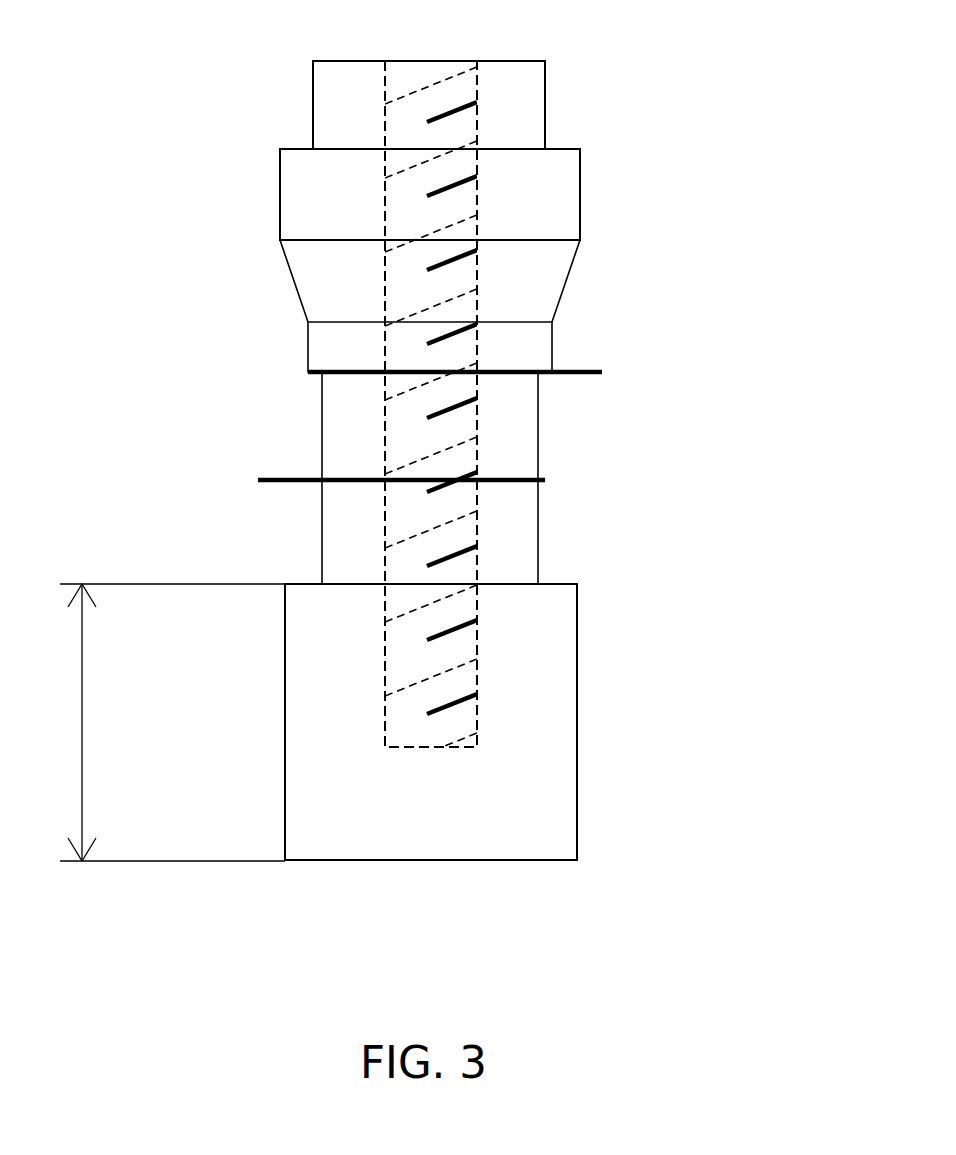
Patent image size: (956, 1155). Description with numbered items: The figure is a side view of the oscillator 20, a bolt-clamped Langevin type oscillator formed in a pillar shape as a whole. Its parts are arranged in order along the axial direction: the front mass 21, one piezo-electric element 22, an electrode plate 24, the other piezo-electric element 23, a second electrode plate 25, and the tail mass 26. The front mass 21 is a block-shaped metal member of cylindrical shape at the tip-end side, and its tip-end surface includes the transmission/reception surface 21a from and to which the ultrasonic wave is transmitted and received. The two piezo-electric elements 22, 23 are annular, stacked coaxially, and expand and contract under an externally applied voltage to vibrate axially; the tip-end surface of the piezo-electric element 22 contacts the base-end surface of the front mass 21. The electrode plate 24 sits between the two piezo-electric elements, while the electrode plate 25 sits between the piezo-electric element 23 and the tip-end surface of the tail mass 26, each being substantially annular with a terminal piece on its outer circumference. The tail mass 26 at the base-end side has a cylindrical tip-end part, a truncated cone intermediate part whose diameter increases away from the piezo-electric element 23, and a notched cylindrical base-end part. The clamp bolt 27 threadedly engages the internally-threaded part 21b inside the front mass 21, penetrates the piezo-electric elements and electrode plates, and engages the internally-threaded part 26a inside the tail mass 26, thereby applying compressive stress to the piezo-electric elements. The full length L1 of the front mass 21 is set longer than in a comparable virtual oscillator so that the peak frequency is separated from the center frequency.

The oscillator 20 is at (673, 143).
The front mass 21 is at (577, 670).
The transmission/reception surface 21a is at (462, 862).
The internally-threaded part 21b is at (477, 720).
The piezo-electric element 22 is at (540, 530).
The piezo-electric element 23 is at (540, 420).
The electrode plate 24 is at (540, 468).
The electrode plate 25 is at (585, 370).
The tail mass 26 is at (557, 224).
The internally-threaded part 26a is at (477, 200).
The clamp bolt 27 is at (477, 163).
The full length of the front mass L1 is at (152, 722).